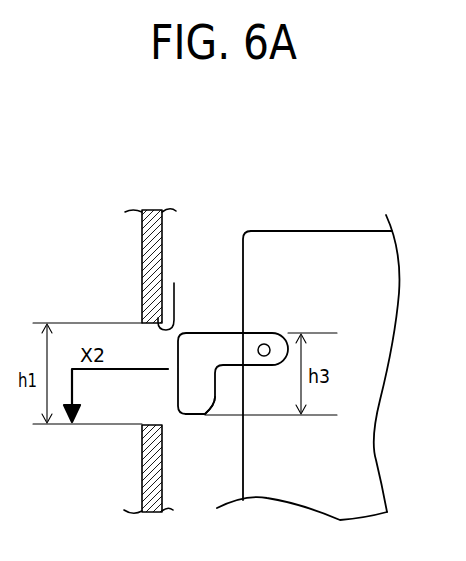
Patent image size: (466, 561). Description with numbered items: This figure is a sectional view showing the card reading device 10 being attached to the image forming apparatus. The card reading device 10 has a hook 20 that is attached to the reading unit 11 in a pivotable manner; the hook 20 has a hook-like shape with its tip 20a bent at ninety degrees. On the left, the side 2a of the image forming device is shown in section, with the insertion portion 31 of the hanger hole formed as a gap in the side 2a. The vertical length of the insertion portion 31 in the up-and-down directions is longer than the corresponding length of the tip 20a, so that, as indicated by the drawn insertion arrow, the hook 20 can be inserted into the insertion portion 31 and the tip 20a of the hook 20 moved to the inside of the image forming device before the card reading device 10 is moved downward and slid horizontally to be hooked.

The side of the image forming device 2a is at (142, 252).
The insertion portion 31 is at (175, 280).
The card reading device 10 is at (308, 333).
The reading unit 11 is at (344, 248).
The hook 20 is at (231, 385).
The tip of the hook 20a is at (188, 418).